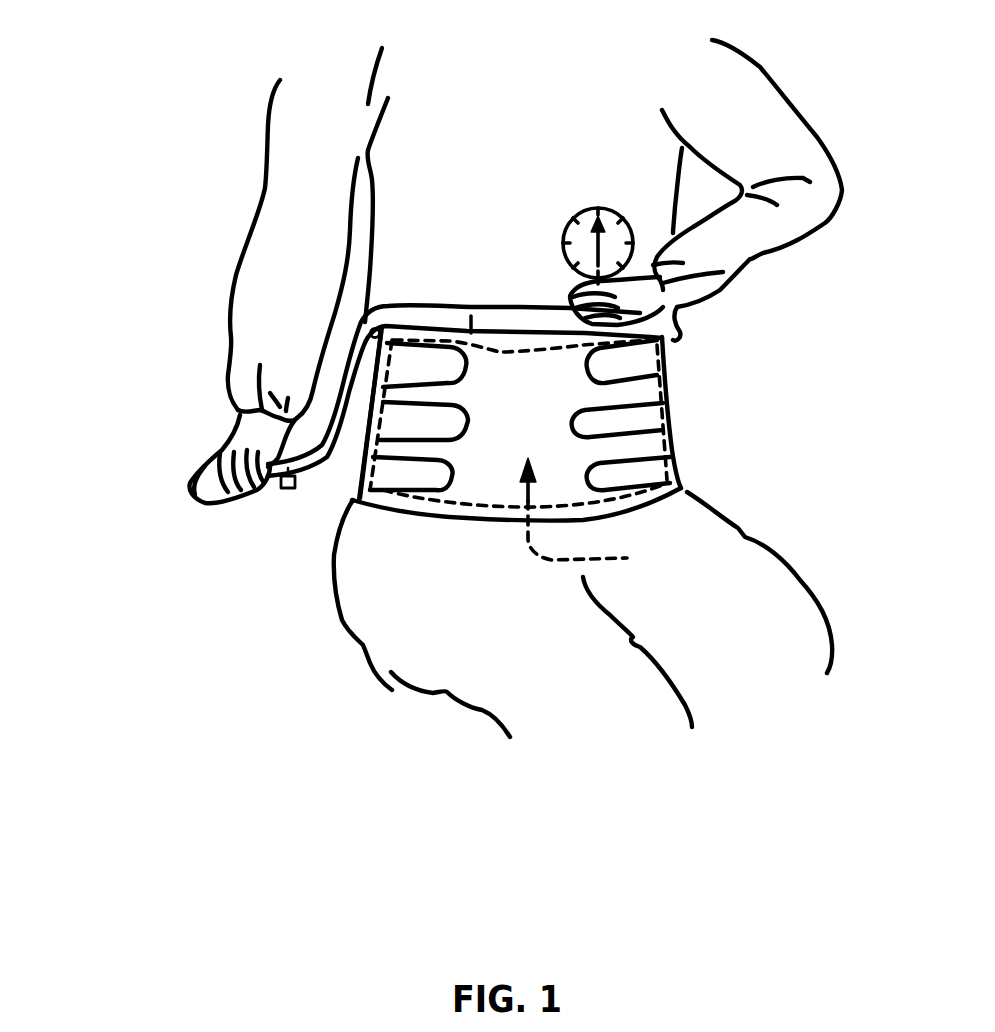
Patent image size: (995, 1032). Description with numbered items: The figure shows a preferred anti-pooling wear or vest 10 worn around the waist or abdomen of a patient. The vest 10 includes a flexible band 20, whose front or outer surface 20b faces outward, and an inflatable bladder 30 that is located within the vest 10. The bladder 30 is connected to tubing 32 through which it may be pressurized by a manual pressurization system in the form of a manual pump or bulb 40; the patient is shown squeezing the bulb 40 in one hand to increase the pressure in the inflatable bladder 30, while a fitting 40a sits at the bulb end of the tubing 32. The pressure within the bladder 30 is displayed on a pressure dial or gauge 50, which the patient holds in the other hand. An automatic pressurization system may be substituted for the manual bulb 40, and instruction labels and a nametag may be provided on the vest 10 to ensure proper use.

The anti-pooling vest 10 is at (673, 442).
The flexible band 20 is at (440, 503).
The outer surface of the band 20b is at (493, 430).
The inflatable bladder 30 is at (518, 456).
The tubing 32 is at (503, 310).
The manual pump or bulb 40 is at (199, 466).
The release valve 40a is at (287, 492).
The pressure gauge 50 is at (586, 208).